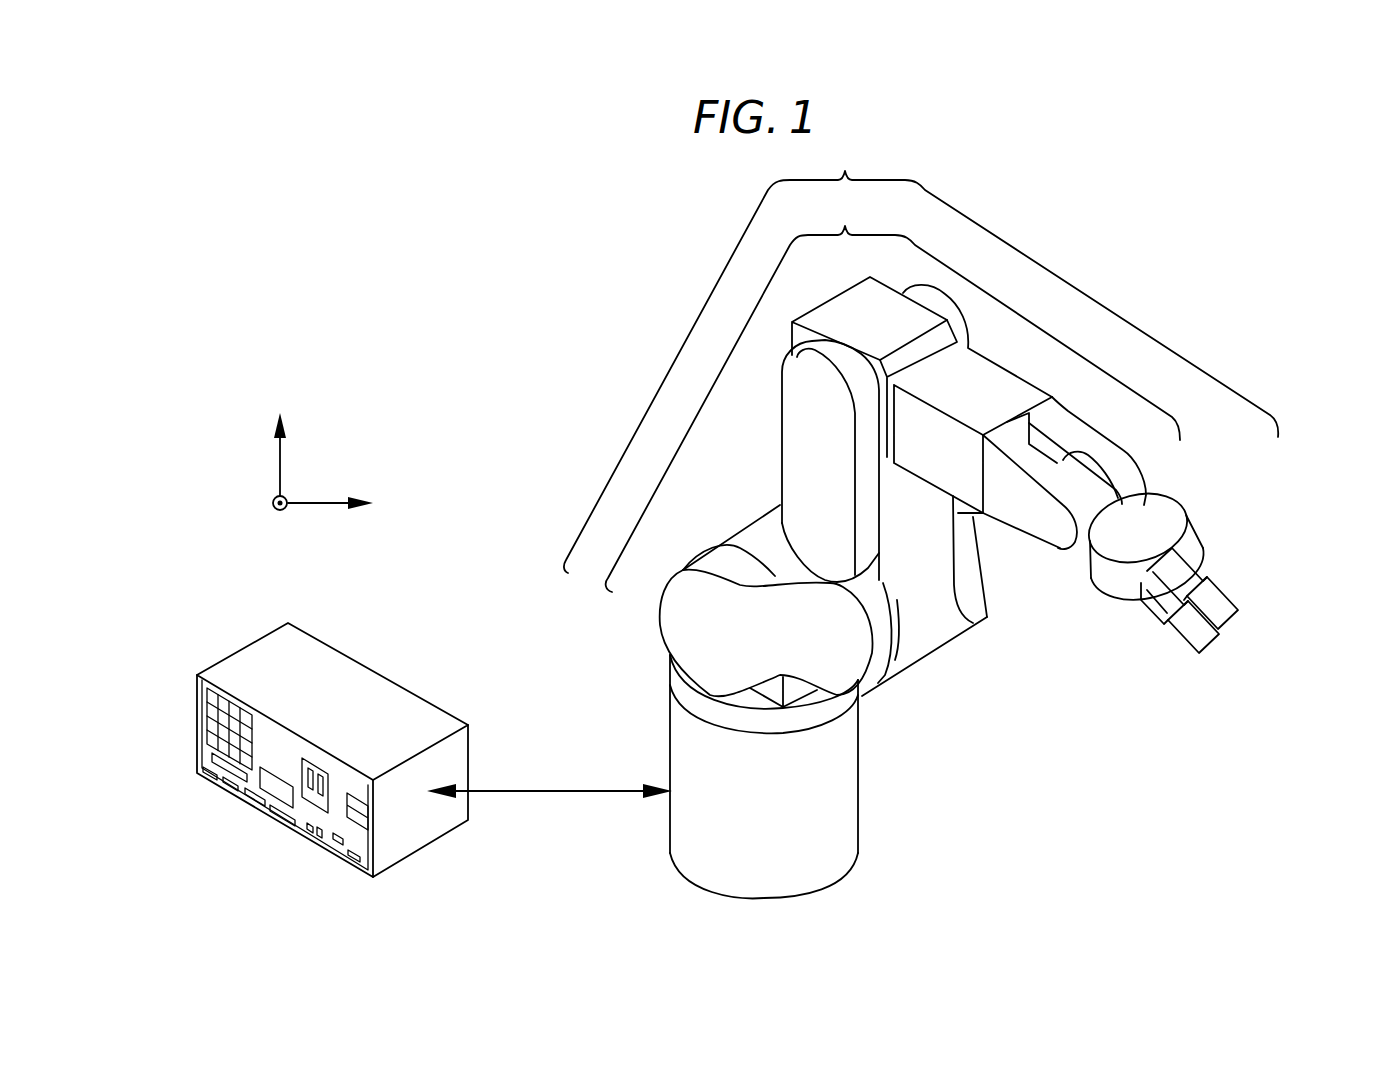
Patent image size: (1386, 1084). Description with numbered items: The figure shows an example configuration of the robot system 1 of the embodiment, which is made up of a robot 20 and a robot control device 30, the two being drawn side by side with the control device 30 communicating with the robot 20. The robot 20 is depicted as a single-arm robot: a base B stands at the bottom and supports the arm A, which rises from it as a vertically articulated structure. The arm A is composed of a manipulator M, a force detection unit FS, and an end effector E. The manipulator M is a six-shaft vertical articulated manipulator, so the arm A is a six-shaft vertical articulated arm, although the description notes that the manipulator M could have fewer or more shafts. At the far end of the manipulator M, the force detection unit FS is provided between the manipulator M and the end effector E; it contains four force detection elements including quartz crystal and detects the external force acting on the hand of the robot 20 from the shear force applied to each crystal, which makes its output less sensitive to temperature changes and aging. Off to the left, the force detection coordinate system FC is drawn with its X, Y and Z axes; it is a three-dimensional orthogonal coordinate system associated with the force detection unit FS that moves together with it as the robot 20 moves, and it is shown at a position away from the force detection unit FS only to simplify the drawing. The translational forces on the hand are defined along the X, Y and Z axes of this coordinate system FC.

The robot system 1 is at (583, 284).
The arm A is at (921, 356).
The manipulator M is at (893, 391).
The force detection coordinate system FC is at (305, 477).
The robot control device 30 is at (470, 751).
The robot 20 is at (1000, 658).
The base B is at (858, 783).
The force detection unit FS is at (1180, 502).
The end effector E is at (1233, 583).